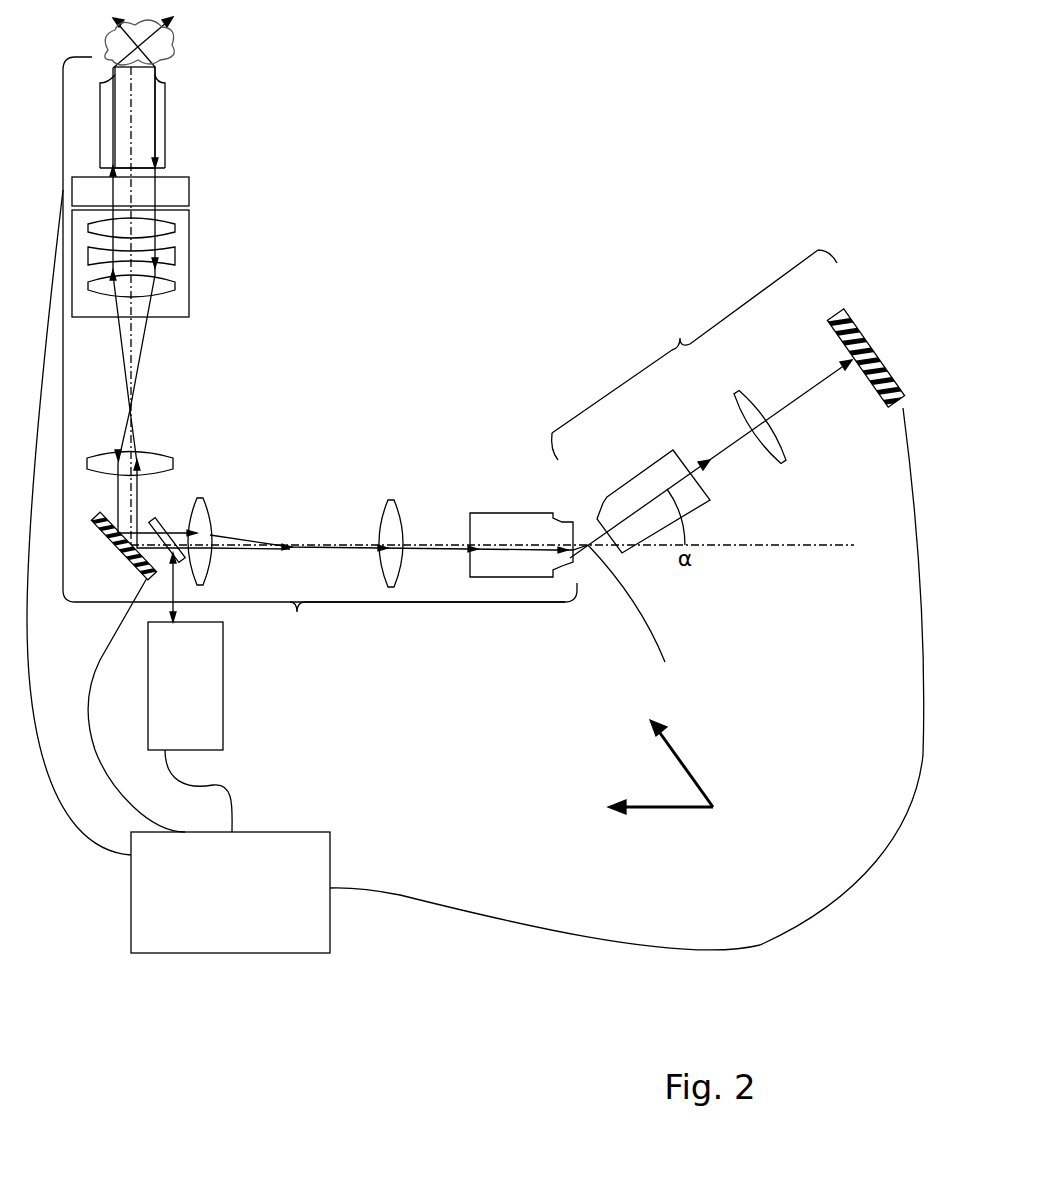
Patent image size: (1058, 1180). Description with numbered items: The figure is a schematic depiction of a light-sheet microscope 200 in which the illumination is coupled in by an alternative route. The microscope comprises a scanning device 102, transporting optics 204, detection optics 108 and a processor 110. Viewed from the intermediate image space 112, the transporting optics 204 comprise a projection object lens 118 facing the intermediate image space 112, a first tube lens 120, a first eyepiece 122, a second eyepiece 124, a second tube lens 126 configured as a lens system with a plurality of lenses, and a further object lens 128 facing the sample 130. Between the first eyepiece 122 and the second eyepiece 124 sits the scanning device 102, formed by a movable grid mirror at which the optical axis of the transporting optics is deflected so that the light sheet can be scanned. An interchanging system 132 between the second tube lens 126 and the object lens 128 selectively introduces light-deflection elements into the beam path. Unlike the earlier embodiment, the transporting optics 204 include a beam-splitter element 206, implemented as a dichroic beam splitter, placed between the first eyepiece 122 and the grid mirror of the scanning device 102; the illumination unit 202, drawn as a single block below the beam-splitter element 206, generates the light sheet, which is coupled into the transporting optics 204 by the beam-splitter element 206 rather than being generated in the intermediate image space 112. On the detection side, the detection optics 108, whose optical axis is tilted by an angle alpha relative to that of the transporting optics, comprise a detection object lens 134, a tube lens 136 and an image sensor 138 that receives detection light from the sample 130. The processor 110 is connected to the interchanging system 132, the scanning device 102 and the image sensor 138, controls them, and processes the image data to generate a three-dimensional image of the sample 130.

The scanning device 102 is at (135, 572).
The detection optics 108 is at (680, 338).
The processor 110 is at (230, 892).
The intermediate image space 112 is at (580, 502).
The projection object lens 118 is at (503, 513).
The first tube lens 120 is at (390, 500).
The first eyepiece 122 is at (207, 507).
The second eyepiece 124 is at (163, 455).
The second tube lens 126 is at (189, 265).
The object lens 128 is at (165, 125).
The sample 130 is at (173, 62).
The interchanging system 132 is at (189, 197).
The detection object lens 134 is at (710, 500).
The tube lens 136 is at (737, 410).
The image sensor 138 is at (825, 322).
The light-sheet microscope 200 is at (490, 207).
The illumination unit 202 is at (190, 727).
The transporting optics 204 is at (297, 612).
The beam-splitter element 206 is at (177, 547).